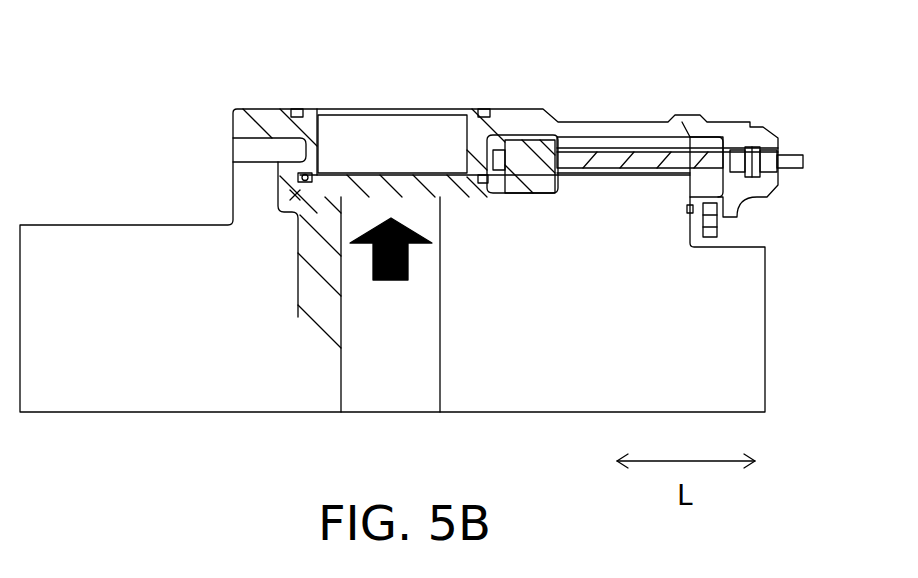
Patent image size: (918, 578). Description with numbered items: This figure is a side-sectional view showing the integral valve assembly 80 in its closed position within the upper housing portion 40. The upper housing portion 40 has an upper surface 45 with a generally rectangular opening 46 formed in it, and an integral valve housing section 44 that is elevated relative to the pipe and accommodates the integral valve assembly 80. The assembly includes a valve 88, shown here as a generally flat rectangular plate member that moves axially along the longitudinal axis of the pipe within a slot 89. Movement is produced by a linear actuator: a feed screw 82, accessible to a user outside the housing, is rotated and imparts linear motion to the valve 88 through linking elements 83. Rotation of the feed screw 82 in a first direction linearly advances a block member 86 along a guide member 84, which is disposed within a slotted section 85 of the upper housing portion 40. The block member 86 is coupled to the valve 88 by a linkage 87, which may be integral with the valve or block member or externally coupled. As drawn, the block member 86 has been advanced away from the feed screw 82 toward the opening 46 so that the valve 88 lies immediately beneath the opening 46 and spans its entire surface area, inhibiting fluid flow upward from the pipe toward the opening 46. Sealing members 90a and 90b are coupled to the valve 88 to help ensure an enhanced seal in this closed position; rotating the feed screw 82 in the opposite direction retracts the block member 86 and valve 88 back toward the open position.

The upper housing portion 40 is at (116, 178).
The integral valve housing section 44 is at (203, 134).
The upper surface 45 is at (246, 110).
The opening 46 is at (341, 103).
The integral valve assembly 80 is at (690, 128).
The feed screw 82 is at (797, 166).
The linking elements 83 is at (736, 150).
The guide member 84 is at (599, 163).
The slotted section 85 is at (628, 142).
The block member 86 is at (534, 150).
The linkage 87 is at (530, 188).
The valve 88 is at (453, 190).
The slot 89 is at (295, 195).
The sealing member 90a is at (298, 175).
The sealing member 90b is at (484, 183).